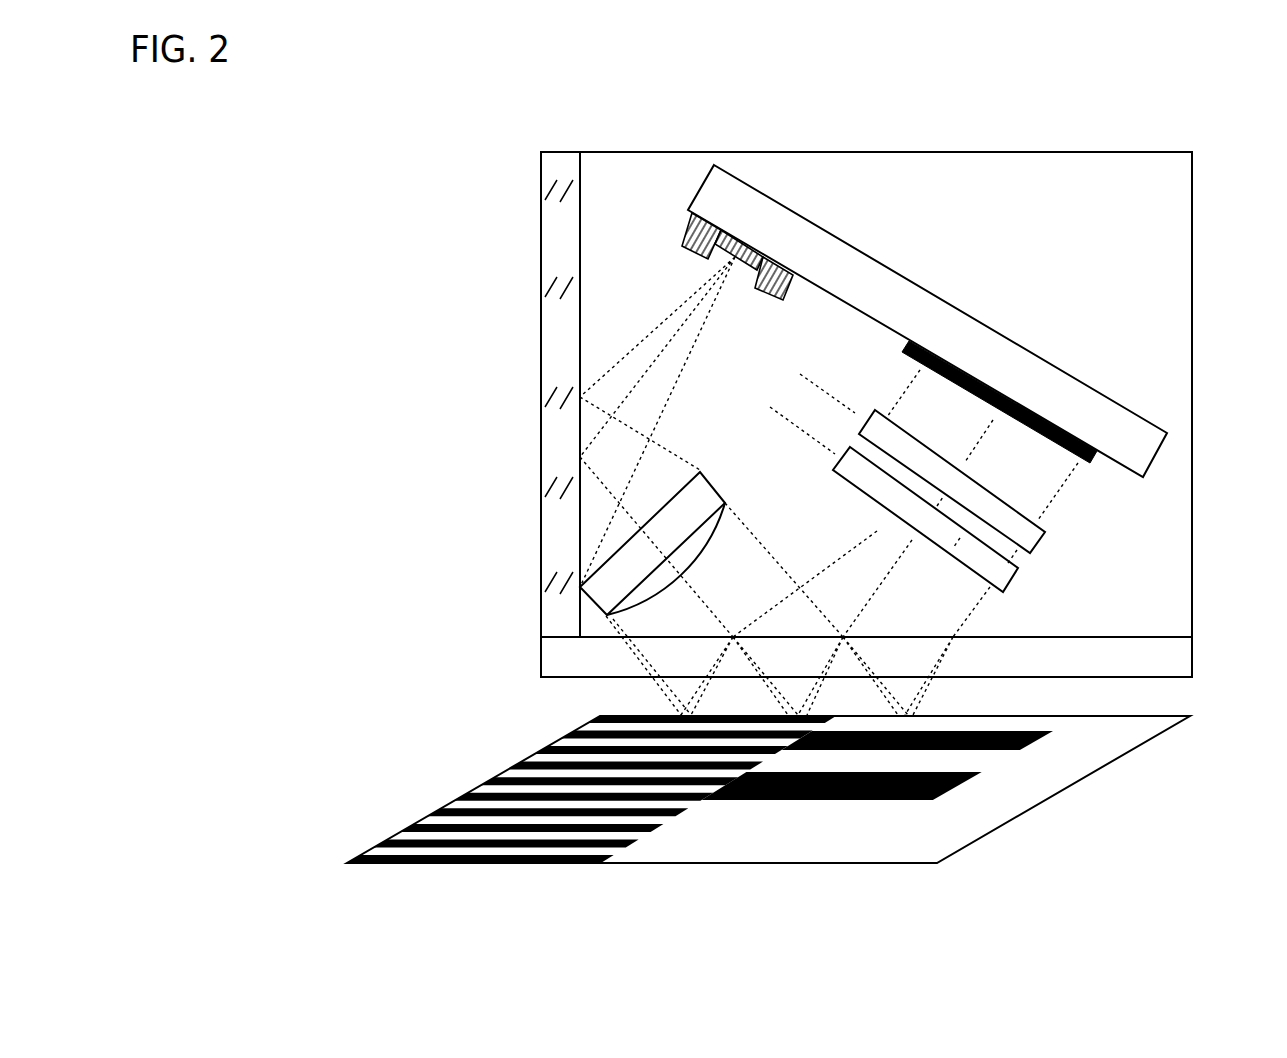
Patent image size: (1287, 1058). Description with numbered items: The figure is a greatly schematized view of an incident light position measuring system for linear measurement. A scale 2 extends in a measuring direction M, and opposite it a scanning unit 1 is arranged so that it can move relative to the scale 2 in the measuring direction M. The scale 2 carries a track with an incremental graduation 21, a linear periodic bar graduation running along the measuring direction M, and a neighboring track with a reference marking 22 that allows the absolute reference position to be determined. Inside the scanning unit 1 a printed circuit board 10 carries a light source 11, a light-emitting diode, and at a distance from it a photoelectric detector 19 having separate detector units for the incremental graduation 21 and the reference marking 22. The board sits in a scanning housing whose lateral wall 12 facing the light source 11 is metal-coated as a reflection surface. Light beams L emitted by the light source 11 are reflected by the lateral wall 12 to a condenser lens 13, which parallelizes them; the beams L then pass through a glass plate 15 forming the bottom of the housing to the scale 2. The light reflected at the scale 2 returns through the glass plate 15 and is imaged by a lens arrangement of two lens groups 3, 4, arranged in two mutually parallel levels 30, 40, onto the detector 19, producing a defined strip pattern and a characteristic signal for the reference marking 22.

The scanning unit 1 is at (1190, 136).
The scale 2 is at (1044, 813).
The lens group 3 is at (1005, 590).
The lens group 4 is at (1032, 552).
The printed circuit board 10 is at (940, 340).
The light source 11 is at (687, 237).
The lateral wall 12 is at (580, 297).
The condenser lens 13 is at (618, 569).
The glass plate 15 is at (540, 651).
The photoelectric detector 19 is at (1086, 468).
The incremental graduation 21 is at (545, 833).
The reference marking 22 is at (813, 800).
The level 30 is at (810, 437).
The level 40 is at (840, 403).
The light beams L is at (605, 430).
The measuring direction M is at (468, 748).